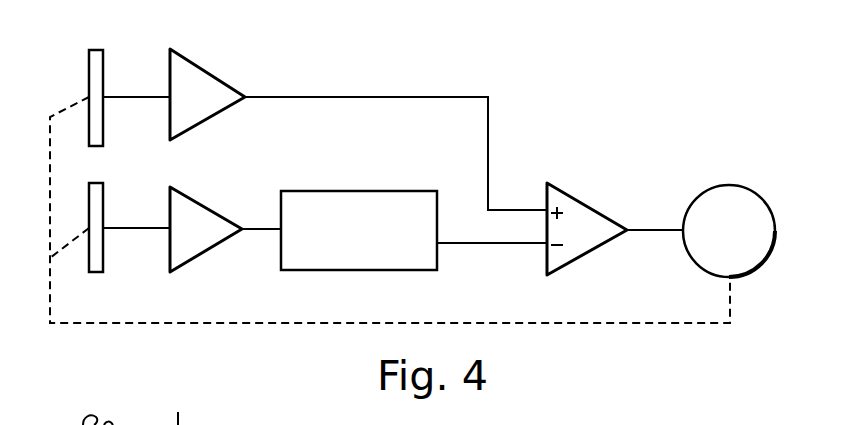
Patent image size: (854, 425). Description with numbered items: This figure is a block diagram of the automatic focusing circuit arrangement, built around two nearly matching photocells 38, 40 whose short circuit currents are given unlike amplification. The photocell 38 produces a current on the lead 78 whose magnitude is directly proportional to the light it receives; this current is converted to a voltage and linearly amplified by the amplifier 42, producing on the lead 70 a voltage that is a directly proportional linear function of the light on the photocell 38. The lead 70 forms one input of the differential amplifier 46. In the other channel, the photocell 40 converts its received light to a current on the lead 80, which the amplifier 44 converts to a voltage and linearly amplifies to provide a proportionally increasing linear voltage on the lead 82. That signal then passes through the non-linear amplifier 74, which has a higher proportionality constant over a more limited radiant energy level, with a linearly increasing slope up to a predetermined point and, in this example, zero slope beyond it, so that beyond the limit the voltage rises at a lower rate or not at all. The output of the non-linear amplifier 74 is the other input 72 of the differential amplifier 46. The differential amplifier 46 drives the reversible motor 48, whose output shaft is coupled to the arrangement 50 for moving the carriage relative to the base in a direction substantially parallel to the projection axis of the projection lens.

The first photocell 38 is at (105, 62).
The second photocell 40 is at (104, 202).
The amplifier 42 is at (228, 84).
The amplifier 44 is at (213, 209).
The differential amplifier 46 is at (595, 210).
The reversible motor 48 is at (729, 185).
The arrangement for moving the carriage 50 is at (648, 325).
The input to the differential amplifier 70 is at (513, 209).
The other input to the differential amplifier 72 is at (501, 245).
The non-linear amplifier 74 is at (358, 191).
The lead 78 is at (142, 96).
The lead 80 is at (126, 229).
The lead 82 is at (254, 231).